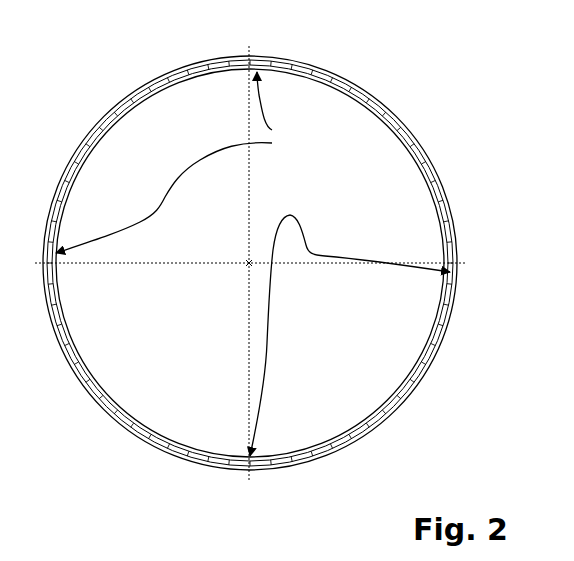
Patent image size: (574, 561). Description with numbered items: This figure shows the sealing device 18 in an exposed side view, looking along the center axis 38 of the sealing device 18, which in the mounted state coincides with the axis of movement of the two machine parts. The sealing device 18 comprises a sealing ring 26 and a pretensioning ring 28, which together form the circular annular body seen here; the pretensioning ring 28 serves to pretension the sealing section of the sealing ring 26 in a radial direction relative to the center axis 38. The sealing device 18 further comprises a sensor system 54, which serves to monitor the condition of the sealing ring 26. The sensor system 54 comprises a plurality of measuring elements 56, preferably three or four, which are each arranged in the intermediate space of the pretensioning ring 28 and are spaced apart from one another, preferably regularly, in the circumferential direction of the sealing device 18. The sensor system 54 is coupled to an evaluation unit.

The sealing device 18 is at (470, 118).
The sealing ring 26 is at (440, 178).
The pretensioning ring 28 is at (366, 93).
The center axis 38 is at (248, 263).
The sensor system 54 is at (302, 127).
The measuring elements 56 is at (178, 162).